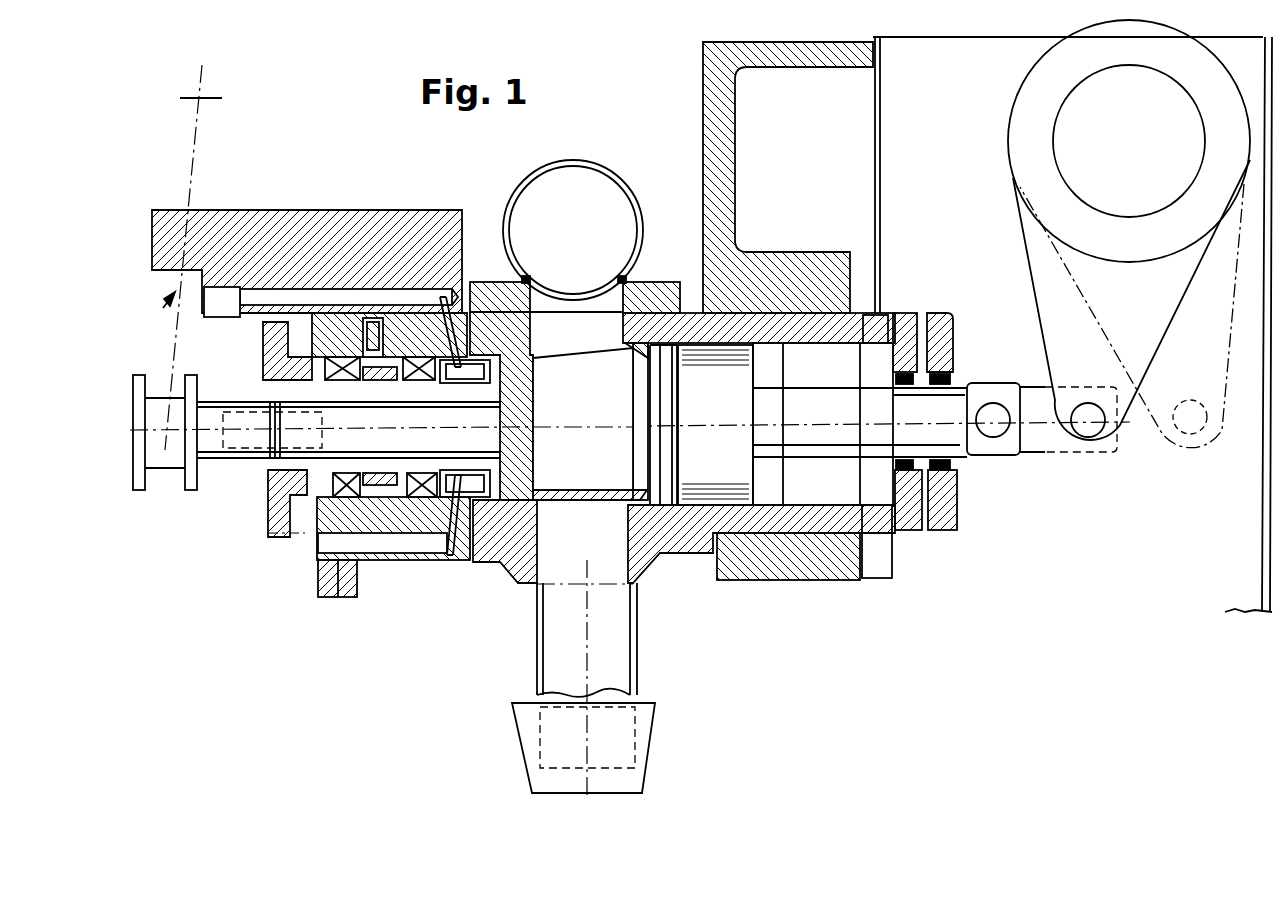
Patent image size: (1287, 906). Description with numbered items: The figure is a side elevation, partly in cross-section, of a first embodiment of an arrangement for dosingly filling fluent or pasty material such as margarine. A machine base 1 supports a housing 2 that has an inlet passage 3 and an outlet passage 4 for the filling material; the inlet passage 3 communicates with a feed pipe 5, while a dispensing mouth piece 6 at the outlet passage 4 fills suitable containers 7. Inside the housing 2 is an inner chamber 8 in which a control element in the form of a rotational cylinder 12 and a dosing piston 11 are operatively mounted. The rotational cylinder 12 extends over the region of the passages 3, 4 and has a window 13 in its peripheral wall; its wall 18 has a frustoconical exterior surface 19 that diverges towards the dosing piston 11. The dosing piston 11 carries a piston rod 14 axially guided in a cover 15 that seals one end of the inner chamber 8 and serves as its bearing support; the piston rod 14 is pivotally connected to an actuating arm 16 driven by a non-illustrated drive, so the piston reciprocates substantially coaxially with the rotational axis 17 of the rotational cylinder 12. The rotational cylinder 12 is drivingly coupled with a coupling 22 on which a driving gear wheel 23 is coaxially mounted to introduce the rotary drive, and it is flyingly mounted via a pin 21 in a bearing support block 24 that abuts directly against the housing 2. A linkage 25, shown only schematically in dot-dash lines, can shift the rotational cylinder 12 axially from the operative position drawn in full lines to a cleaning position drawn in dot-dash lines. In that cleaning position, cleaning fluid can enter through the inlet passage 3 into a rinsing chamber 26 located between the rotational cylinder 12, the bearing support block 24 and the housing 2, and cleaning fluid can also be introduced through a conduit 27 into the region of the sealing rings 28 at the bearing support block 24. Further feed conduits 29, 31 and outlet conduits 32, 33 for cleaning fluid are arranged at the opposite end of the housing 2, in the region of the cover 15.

The machine base 1 is at (700, 87).
The housing 2 is at (706, 320).
The inlet passage 3 is at (548, 332).
The outlet passage 4 is at (540, 562).
The feed pipe 5 is at (598, 168).
The dispensing mouth piece 6 is at (637, 614).
The containers 7 is at (648, 712).
The inner chamber 8 is at (822, 490).
The dosing piston 11 is at (712, 488).
The rotational cylinder 12 is at (594, 499).
The window 13 is at (605, 360).
The piston rod 14 is at (875, 520).
The cover 15 is at (945, 352).
The actuating arm 16 is at (1046, 304).
The rotational axis 17 is at (590, 440).
The wall 18 is at (565, 497).
The frustoconical exterior surface 19 is at (606, 500).
The pin 21 is at (297, 410).
The coupling 22 is at (247, 452).
The driving gear wheel 23 is at (282, 520).
The bearing support block 24 is at (332, 322).
The linkage 25 is at (164, 316).
The rinsing chamber 26 is at (495, 325).
The conduit 27 is at (367, 296).
The sealing rings 28 is at (445, 505).
The feed conduit 29 is at (876, 328).
The feed conduit 31 is at (912, 325).
The outlet conduit 32 is at (893, 532).
The outlet conduit 33 is at (932, 520).